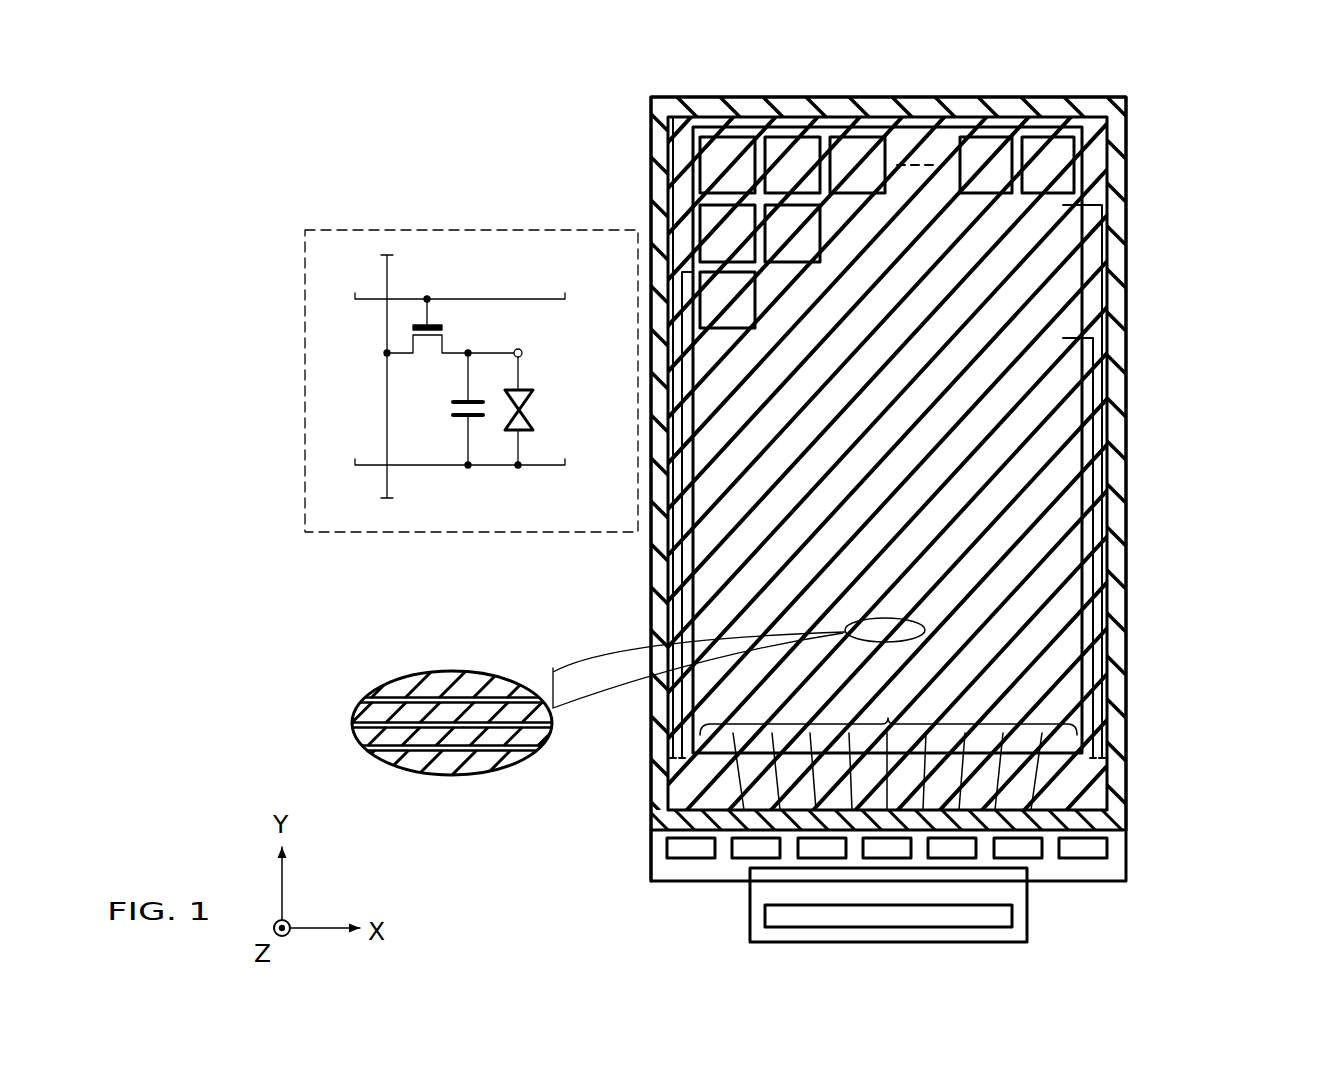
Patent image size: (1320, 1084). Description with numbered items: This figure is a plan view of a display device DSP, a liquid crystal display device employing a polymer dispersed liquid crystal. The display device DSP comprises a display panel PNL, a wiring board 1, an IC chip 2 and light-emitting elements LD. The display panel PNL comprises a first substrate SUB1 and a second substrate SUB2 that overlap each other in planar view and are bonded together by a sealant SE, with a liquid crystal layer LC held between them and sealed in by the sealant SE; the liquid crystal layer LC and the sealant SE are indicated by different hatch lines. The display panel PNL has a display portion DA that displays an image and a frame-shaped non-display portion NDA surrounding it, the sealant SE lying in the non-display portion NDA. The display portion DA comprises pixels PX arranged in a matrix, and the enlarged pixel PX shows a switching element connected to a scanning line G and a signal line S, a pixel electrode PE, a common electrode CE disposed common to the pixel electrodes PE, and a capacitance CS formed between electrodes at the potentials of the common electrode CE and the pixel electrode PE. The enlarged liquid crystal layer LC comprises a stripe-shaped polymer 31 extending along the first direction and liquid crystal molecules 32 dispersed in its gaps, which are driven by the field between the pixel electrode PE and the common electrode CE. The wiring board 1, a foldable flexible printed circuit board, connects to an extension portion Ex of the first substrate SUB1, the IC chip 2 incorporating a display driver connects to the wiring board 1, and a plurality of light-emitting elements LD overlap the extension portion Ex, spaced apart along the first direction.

The display device DSP is at (1212, 147).
The display panel PNL is at (1130, 93).
The first substrate SUB1 is at (1115, 859).
The second substrate SUB2 is at (1113, 809).
The sealant SE is at (1115, 693).
The non-display portion NDA is at (1128, 603).
The display portion DA is at (1088, 542).
The pixel PX is at (558, 195).
The scanning line G is at (675, 722).
The signal line S is at (887, 718).
The light-emitting element LD is at (690, 852).
The extension portion Ex is at (651, 864).
The wiring board 1 is at (1027, 926).
The IC chip 2 is at (943, 912).
The liquid crystal layer LC is at (736, 599).
The polymer 31 is at (360, 740).
The liquid crystal molecules 32 is at (442, 746).
The pixel electrode PE is at (524, 353).
The common electrode CE is at (542, 467).
The capacitance CS is at (448, 410).